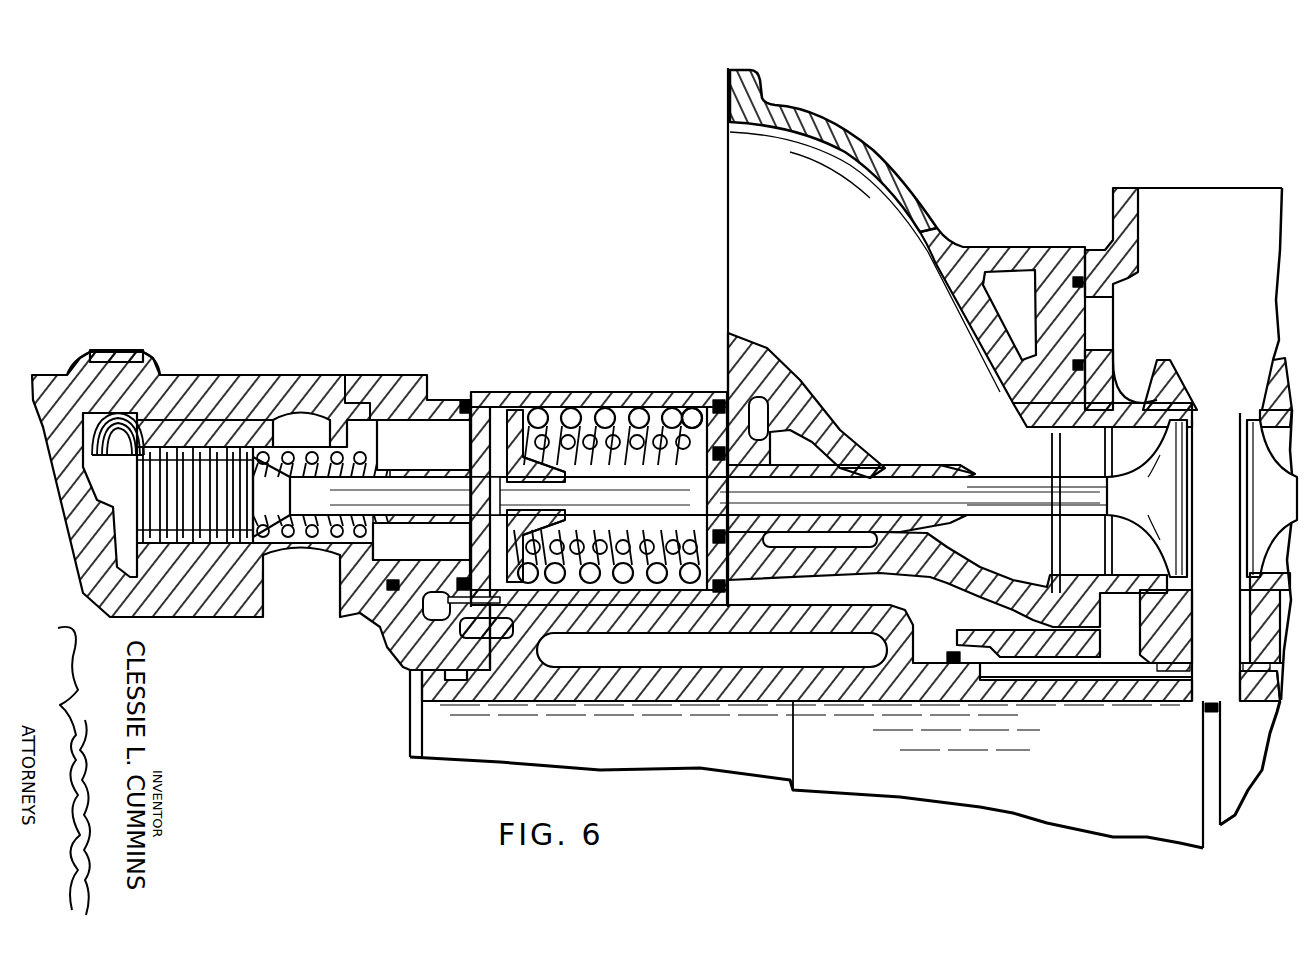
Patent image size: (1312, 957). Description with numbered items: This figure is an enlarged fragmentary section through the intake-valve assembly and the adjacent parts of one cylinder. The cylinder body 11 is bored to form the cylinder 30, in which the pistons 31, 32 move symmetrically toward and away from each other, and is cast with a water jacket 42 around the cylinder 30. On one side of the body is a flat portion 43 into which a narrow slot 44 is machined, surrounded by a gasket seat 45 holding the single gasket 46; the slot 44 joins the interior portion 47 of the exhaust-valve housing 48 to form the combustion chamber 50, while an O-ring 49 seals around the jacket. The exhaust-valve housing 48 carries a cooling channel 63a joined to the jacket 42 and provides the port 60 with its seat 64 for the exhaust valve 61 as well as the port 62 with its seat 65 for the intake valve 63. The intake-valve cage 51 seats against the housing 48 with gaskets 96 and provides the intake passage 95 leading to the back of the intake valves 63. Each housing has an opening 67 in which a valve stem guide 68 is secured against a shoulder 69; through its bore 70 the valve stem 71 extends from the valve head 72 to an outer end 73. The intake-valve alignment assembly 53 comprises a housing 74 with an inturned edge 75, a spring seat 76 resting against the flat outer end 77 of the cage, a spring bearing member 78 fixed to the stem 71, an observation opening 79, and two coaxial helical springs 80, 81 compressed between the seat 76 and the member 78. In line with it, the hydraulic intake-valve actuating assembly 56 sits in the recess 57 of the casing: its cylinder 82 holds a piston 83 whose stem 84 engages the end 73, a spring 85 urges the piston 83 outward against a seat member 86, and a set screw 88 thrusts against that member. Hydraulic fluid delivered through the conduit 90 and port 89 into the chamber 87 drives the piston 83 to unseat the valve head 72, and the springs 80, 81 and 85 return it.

The cylinder body 11 is at (498, 690).
The cylinder 30 is at (1070, 703).
The piston 31 is at (1099, 798).
The piston 32 is at (1248, 785).
The water jacket 42 is at (605, 662).
The flat portion 43 is at (1272, 703).
The slot 44 is at (1193, 690).
The gasket seat 45 is at (1245, 677).
The gasket 46 is at (1248, 660).
The interior portion of exhaust-valve housing 47 is at (1216, 557).
The exhaust-valve housing 48 is at (1255, 185).
The O-ring 49 is at (952, 653).
The combustion chamber 50 is at (1213, 755).
The intake-valve cage 51 is at (865, 337).
The intake-valve alignment assembly 53 is at (624, 460).
The hydraulic intake-valve actuating assembly 56 is at (240, 420).
The recess 57 is at (622, 472).
The exhaust-valve port 60 is at (1258, 400).
The exhaust valve 61 is at (1250, 448).
The intake-valve port 62 is at (1172, 405).
The intake valve 63 is at (1147, 498).
The cooling channel 63a is at (1122, 662).
The seat 64 is at (1255, 585).
The seat 65 is at (1092, 580).
The opening 67 is at (867, 475).
The valve stem guide 68 is at (950, 521).
The shoulder 69 is at (903, 452).
The bore 70 is at (945, 476).
The valve stem 71 is at (1030, 500).
The valve head 72 is at (1150, 522).
The outer end of valve stem 73 is at (470, 522).
The housing 74 is at (553, 400).
The inturned edge 75 is at (482, 418).
The spring seat 76 is at (728, 448).
The flat outer end 77 is at (758, 430).
The spring bearing member 78 is at (515, 412).
The opening 79 is at (530, 398).
The helical spring 80 is at (650, 420).
The helical spring 81 is at (672, 427).
The cylinder 82 is at (258, 413).
The piston 83 is at (200, 535).
The stem 84 is at (402, 500).
The spring 85 is at (322, 545).
The seat member 86 is at (421, 480).
The chamber 87 is at (122, 478).
The set screw 88 is at (350, 377).
The port 89 is at (108, 417).
The conduit 90 is at (122, 350).
The intake passage 95 is at (752, 245).
The gasket 96 is at (1082, 285).